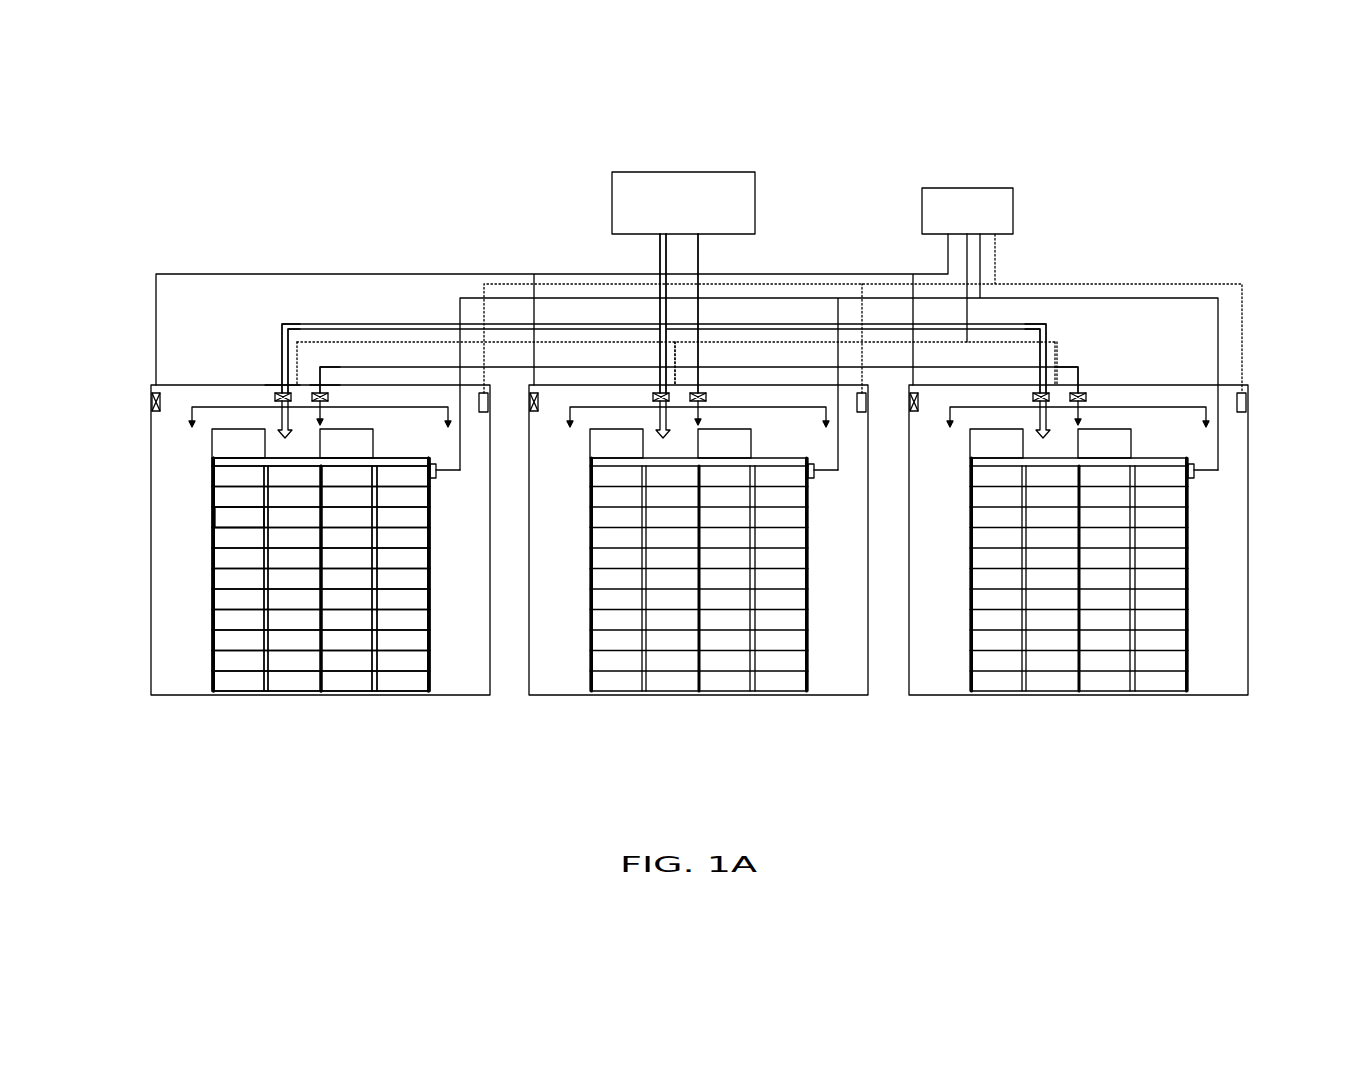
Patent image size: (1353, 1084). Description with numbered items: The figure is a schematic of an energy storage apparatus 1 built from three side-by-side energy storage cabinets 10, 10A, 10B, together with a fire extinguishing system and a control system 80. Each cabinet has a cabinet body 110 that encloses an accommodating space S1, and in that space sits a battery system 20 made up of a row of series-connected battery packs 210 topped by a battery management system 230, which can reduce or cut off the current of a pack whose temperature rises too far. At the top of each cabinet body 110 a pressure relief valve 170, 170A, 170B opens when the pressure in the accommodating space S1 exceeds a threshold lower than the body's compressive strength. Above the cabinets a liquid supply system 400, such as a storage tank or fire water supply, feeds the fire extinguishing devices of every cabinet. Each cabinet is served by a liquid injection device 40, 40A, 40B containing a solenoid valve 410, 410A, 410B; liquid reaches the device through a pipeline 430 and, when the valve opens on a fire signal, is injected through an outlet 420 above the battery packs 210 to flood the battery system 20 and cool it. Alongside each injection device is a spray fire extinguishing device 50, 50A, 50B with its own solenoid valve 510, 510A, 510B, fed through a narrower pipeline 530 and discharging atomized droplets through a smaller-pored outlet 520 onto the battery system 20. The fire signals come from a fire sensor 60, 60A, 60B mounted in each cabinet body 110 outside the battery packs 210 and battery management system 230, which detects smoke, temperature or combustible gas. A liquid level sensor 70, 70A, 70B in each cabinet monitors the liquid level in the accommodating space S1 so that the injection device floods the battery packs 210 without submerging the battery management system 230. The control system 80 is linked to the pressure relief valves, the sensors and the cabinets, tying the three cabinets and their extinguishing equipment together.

The energy storage apparatus 1 is at (148, 147).
The energy storage cabinet 10 is at (322, 700).
The energy storage cabinet 10A is at (700, 700).
The energy storage cabinet 10B is at (1078, 700).
The battery system 20 is at (198, 493).
The cabinet body 110 is at (152, 571).
The pressure relief valve 170 is at (152, 402).
The pressure relief valve 170A is at (534, 412).
The pressure relief valve 170B is at (914, 412).
The battery pack 210 is at (222, 516).
The battery management system 230 is at (218, 440).
The liquid injection device 40 is at (278, 395).
The liquid injection device 40A is at (654, 386).
The liquid injection device 40B is at (1034, 388).
The solenoid valve 410 is at (279, 420).
The solenoid valve 410A is at (655, 397).
The solenoid valve 410B is at (1049, 397).
The outlet 420 is at (282, 434).
The pipeline 430 is at (273, 381).
The spray fire extinguishing device 50 is at (325, 384).
The spray fire extinguishing device 50A is at (706, 386).
The spray fire extinguishing device 50B is at (1085, 388).
The solenoid valve 510 is at (330, 405).
The solenoid valve 510A is at (714, 397).
The solenoid valve 510B is at (1088, 398).
The outlet 520 is at (326, 420).
The pipeline 530 is at (321, 393).
The fire sensor 60 is at (437, 480).
The fire sensor 60A is at (815, 480).
The fire sensor 60B is at (1194, 476).
The liquid level sensor 70 is at (483, 413).
The liquid level sensor 70A is at (862, 413).
The liquid level sensor 70B is at (1248, 403).
The control system 80 is at (962, 195).
The liquid supply system 400 is at (682, 177).
The accommodating space S1 is at (176, 684).